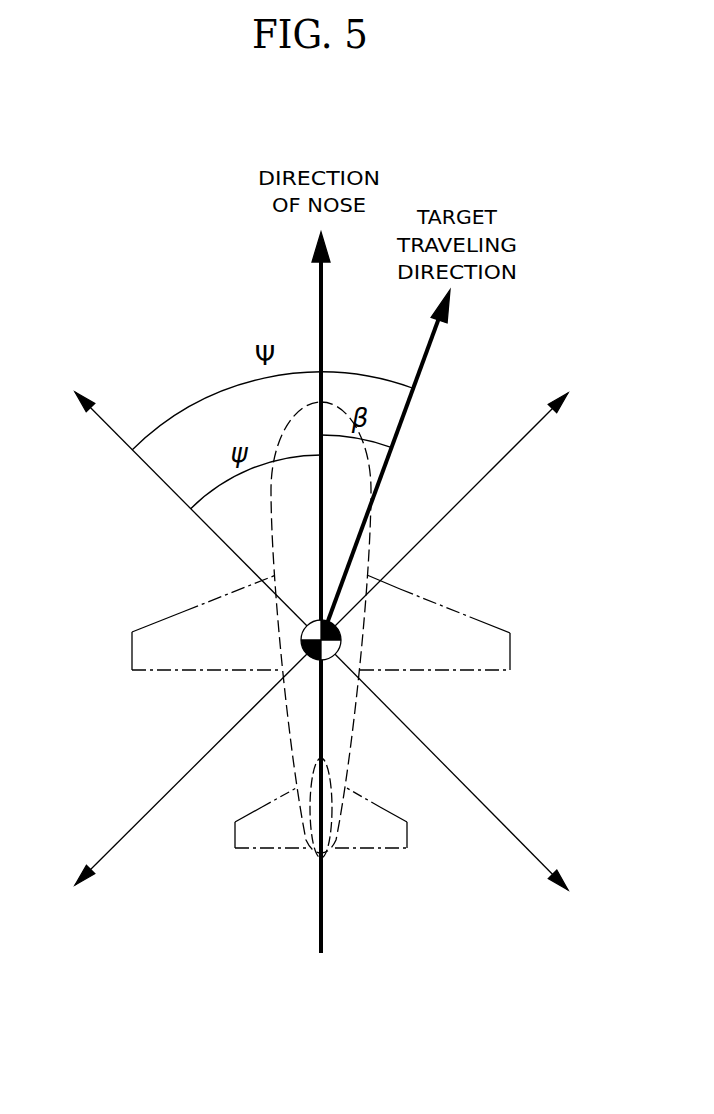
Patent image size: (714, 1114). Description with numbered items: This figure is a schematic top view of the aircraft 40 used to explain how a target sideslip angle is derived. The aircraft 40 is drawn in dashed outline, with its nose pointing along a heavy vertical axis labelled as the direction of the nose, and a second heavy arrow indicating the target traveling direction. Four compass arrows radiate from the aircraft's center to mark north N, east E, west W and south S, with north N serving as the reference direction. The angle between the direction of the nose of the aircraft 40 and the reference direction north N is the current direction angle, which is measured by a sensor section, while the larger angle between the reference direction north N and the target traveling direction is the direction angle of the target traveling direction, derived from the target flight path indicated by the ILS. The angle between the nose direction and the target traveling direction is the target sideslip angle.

The aircraft 40 is at (132, 648).
The north N is at (187, 508).
The east direction arrow E is at (456, 507).
The west direction arrow W is at (185, 773).
The south direction arrow S is at (454, 771).